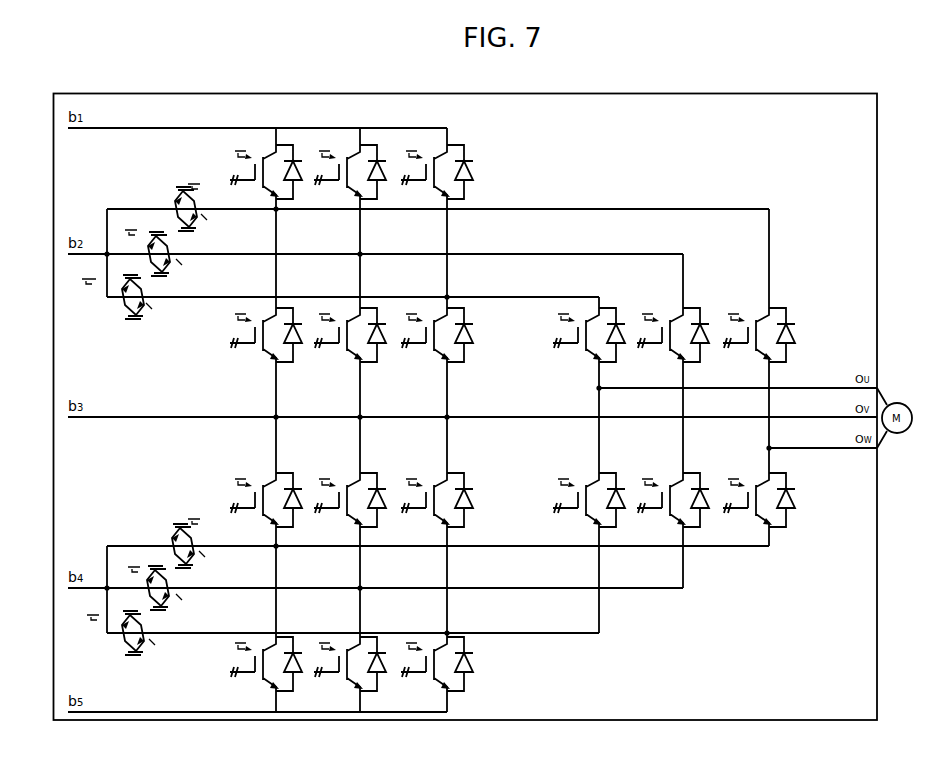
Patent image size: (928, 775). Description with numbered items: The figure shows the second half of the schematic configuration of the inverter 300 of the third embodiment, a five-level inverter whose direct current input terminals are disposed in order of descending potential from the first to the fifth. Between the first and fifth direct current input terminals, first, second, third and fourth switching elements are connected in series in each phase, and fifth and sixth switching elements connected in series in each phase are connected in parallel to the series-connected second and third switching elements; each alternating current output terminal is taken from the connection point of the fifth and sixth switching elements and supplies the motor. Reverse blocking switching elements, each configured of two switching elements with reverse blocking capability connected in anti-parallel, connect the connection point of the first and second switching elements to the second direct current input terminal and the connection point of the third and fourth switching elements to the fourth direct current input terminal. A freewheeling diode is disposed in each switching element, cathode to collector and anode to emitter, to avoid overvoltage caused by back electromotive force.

The inverter 300 is at (822, 93).